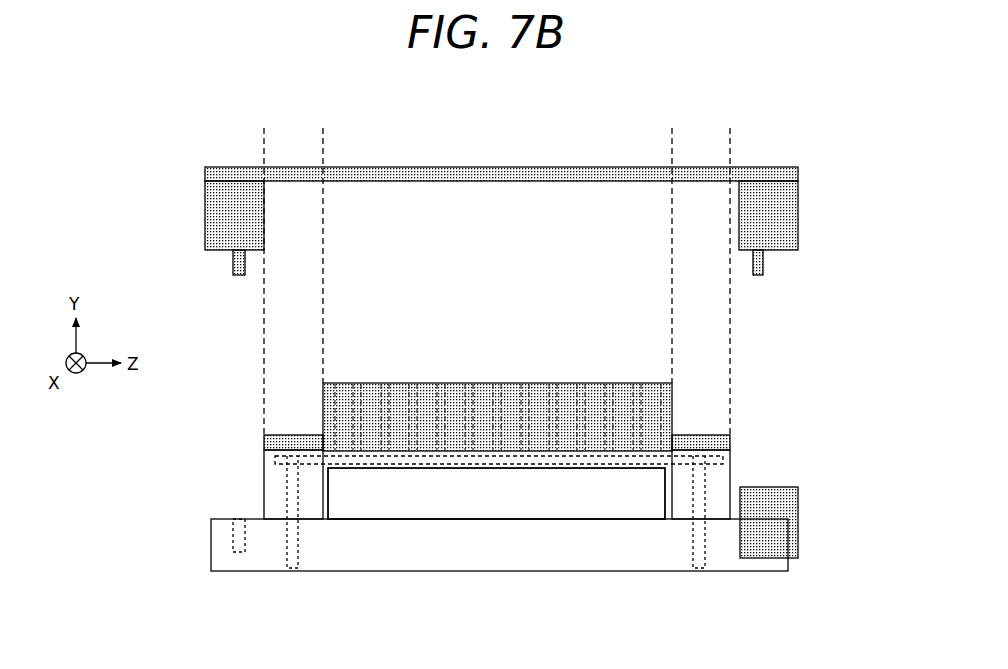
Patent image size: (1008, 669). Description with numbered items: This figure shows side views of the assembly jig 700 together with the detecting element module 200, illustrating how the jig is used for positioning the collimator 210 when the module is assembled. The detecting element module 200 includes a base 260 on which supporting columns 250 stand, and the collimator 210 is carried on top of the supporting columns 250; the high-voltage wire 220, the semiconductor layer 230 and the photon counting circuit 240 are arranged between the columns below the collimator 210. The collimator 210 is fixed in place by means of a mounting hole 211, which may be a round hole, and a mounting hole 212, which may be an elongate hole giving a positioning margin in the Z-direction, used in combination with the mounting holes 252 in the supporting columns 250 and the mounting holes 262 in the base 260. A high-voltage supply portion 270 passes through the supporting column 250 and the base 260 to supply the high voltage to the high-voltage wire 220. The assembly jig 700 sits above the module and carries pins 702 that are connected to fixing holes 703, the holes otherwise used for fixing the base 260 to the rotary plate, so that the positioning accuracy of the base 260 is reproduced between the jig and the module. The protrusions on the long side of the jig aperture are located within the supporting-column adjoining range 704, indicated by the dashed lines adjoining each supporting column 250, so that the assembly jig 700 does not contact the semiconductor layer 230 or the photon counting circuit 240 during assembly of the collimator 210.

The assembly jig 700 is at (853, 128).
The pin 702 is at (233, 262).
The supporting-column adjoining range 704 is at (321, 142).
The detecting element module 200 is at (808, 360).
The collimator 210 is at (673, 385).
The mounting hole 211 is at (685, 435).
The mounting hole 212 is at (290, 435).
The high-voltage wire 220 is at (713, 460).
The semiconductor layer 230 is at (530, 519).
The photon counting circuit 240 is at (496, 493).
The supporting column 250 is at (264, 490).
The mounting hole 252 is at (292, 571).
The base 260 is at (242, 571).
The mounting hole 262 is at (292, 512).
The high-voltage supply portion 270 is at (699, 512).
The fixing hole 703 is at (239, 519).